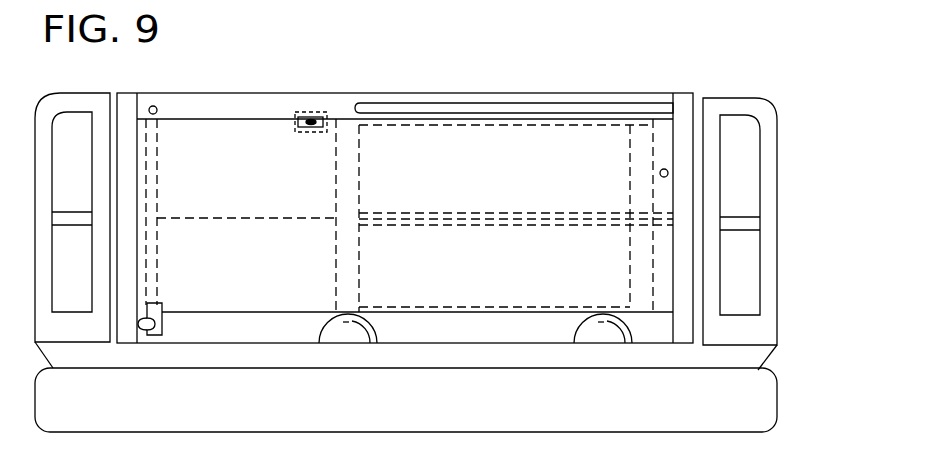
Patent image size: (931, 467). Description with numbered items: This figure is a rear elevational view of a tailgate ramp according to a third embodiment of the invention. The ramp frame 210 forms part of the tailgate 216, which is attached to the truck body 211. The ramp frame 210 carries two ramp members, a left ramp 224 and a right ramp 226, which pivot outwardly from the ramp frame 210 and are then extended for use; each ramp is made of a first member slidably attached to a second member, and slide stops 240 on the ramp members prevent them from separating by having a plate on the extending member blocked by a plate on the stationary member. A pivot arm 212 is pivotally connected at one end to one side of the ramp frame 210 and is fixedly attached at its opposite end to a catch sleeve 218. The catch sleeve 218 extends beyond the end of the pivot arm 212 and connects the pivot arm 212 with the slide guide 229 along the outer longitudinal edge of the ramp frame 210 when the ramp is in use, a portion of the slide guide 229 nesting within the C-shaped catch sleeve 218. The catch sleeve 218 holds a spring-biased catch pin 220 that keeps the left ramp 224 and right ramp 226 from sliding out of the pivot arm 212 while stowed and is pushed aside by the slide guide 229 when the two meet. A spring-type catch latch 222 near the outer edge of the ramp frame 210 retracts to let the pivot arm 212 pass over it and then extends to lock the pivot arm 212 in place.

The ramp frame 210 is at (692, 103).
The truck body 211 is at (768, 215).
The pivot arm 212 is at (157, 220).
The tailgate 216 is at (208, 95).
The catch sleeve 218 is at (158, 338).
The catch pin 220 is at (143, 322).
The catch latch 222 is at (316, 117).
The left ramp 224 is at (530, 184).
The right ramp 226 is at (530, 279).
The slide guide 229 is at (455, 103).
The slide stops 240 is at (665, 195).